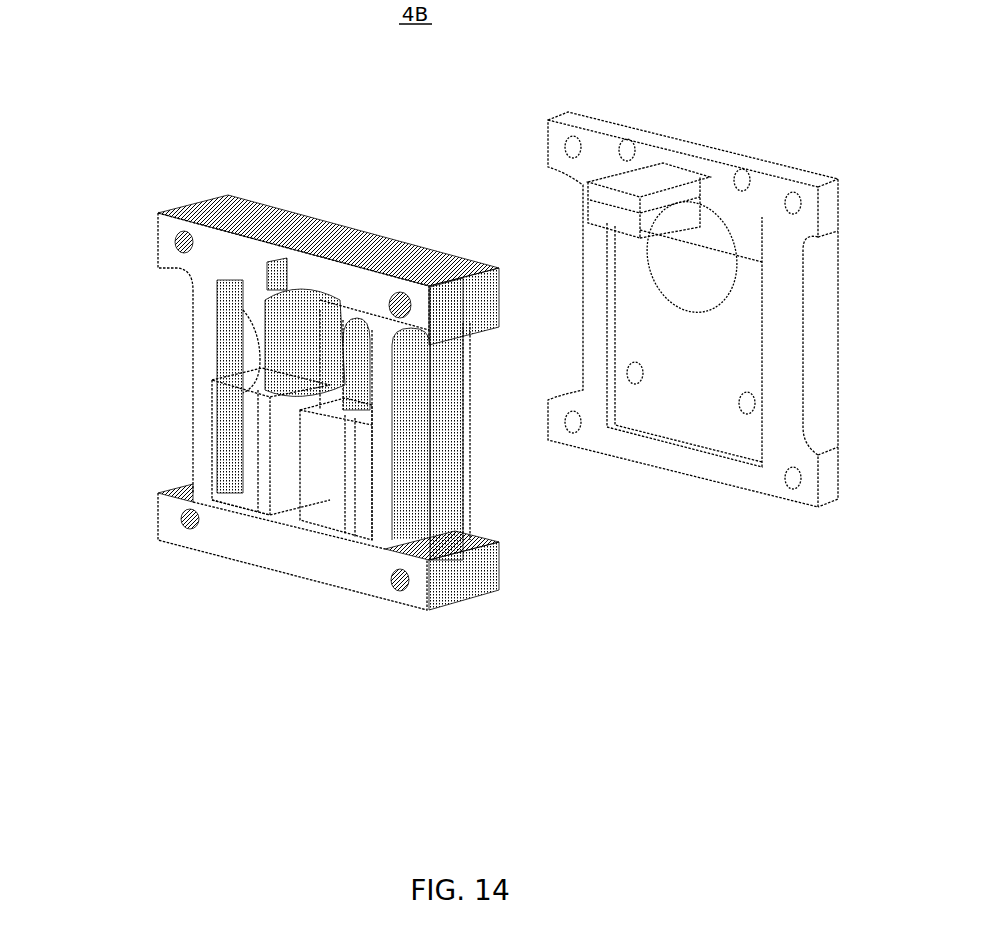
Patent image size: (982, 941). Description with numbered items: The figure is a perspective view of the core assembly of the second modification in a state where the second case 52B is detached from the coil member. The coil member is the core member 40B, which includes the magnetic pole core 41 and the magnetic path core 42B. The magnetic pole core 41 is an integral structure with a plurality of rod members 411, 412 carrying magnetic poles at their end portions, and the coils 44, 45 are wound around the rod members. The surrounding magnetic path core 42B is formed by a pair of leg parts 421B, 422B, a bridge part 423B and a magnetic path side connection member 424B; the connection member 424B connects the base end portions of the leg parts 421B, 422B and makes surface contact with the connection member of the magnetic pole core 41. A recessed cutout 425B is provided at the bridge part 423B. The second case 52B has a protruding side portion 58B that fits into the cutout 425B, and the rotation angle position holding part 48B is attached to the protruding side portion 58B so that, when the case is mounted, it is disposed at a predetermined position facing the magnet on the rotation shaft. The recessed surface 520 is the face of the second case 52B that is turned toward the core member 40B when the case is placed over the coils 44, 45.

The core member 40B is at (321, 389).
The magnetic pole core 41 is at (205, 555).
The magnetic path core 42B is at (321, 389).
The coil 44 is at (240, 440).
The coil 45 is at (322, 478).
The rotation angle position holding part 48B is at (597, 210).
The second case 52B is at (666, 298).
The protruding side portion 58B is at (648, 178).
The rod member 411 is at (244, 372).
The rod member 412 is at (340, 383).
The leg part 421B is at (198, 384).
The leg part 422B is at (435, 477).
The bridge part 423B is at (313, 242).
The magnetic path side connection member 424B is at (480, 592).
The cutout 425B is at (310, 295).
The recessed surface 520 is at (730, 355).